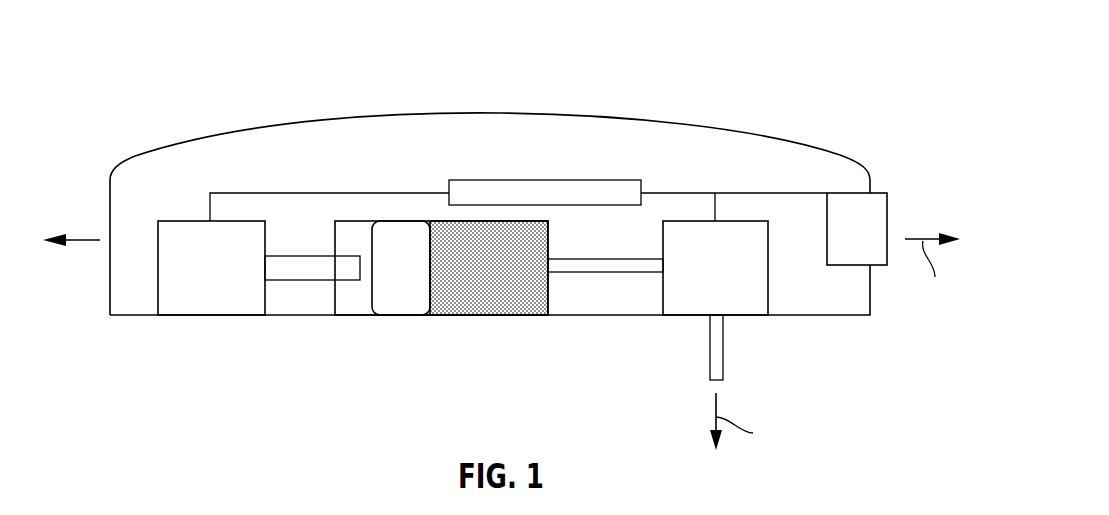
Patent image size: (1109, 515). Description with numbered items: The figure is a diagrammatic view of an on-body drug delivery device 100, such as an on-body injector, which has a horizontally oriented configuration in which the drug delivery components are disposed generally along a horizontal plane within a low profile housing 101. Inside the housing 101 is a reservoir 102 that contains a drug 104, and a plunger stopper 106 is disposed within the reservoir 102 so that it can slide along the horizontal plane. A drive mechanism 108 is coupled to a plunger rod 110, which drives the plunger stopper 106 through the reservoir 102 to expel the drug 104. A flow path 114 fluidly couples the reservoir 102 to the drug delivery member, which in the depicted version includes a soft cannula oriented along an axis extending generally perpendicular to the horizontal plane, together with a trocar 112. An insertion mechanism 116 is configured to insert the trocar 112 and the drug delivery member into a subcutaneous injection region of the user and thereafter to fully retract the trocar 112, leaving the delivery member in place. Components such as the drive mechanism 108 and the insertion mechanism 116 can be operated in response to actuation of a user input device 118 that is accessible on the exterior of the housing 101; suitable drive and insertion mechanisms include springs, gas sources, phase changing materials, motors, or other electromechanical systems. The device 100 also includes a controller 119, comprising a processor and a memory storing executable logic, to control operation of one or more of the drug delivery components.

The drug delivery device 100 is at (782, 38).
The housing 101 is at (160, 147).
The reservoir 102 is at (352, 232).
The drug 104 is at (478, 303).
The plunger stopper 106 is at (397, 302).
The drive mechanism 108 is at (185, 302).
The plunger rod 110 is at (292, 283).
The trocar 112 is at (723, 367).
The flow path 114 is at (600, 272).
The insertion mechanism 116 is at (768, 300).
The user input device 118 is at (878, 192).
The controller 119 is at (613, 178).